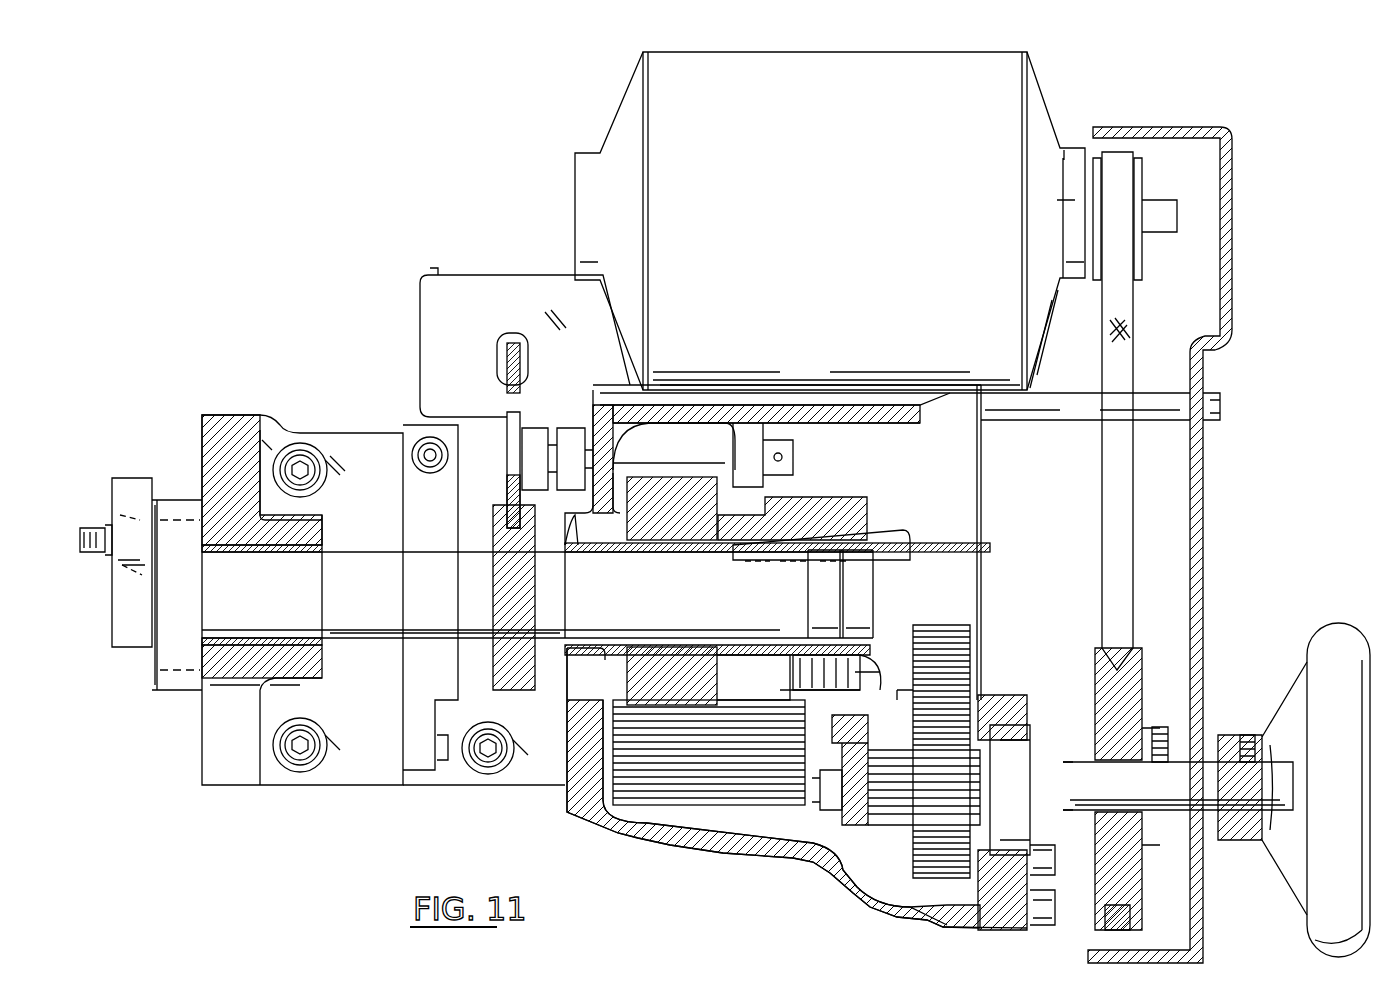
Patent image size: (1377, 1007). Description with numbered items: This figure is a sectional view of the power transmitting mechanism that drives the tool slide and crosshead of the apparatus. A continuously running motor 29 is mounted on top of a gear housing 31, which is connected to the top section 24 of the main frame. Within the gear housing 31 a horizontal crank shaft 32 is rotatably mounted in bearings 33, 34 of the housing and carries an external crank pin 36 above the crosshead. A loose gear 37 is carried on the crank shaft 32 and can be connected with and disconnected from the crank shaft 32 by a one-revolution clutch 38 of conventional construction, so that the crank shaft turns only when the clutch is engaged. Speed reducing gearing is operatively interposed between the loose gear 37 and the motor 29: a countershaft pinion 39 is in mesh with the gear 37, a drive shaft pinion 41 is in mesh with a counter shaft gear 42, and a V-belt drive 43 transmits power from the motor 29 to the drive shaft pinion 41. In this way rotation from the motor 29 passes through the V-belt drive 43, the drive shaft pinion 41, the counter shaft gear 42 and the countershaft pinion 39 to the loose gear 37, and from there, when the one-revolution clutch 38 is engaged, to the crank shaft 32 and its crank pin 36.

The top section 24 is at (405, 785).
The motor 29 is at (832, 195).
The gear housing 31 is at (792, 852).
The crank shaft 32 is at (358, 560).
The bearing 33 is at (305, 640).
The bearing 34 is at (577, 520).
The crank pin 36 is at (135, 510).
The loose gear 37 is at (652, 683).
The one-revolution clutch 38 is at (843, 497).
The countershaft pinion 39 is at (697, 795).
The drive shaft pinion 41 is at (893, 800).
The counter shaft gear 42 is at (933, 731).
The V-belt drive 43 is at (1105, 462).